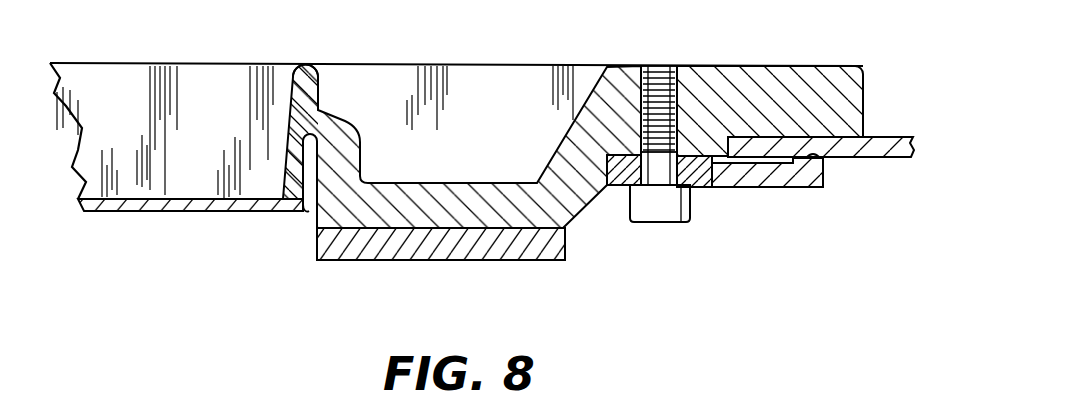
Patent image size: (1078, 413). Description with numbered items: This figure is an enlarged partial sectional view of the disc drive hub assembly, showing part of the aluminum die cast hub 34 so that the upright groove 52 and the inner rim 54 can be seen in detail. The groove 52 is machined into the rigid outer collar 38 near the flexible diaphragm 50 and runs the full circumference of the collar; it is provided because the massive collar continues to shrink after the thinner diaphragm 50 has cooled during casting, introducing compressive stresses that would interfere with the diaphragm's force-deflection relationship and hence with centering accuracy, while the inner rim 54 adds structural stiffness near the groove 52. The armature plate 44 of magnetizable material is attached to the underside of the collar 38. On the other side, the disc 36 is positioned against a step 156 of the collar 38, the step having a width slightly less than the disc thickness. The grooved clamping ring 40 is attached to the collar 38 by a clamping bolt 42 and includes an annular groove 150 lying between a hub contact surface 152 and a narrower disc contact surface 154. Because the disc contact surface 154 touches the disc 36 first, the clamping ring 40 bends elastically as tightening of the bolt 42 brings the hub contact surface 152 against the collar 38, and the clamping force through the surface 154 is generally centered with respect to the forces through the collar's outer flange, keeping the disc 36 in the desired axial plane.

The hub 34 is at (223, 119).
The disc 36 is at (887, 145).
The collar 38 is at (808, 78).
The clamping ring 40 is at (730, 188).
The clamping bolt 42 is at (653, 225).
The armature plate 44 is at (482, 262).
The diaphragm 50 is at (143, 212).
The groove 52 is at (306, 214).
The inner rim 54 is at (303, 68).
The annular groove 150 is at (771, 163).
The hub contact surface 152 is at (612, 157).
The disc contact surface 154 is at (812, 152).
The step 156 is at (728, 150).